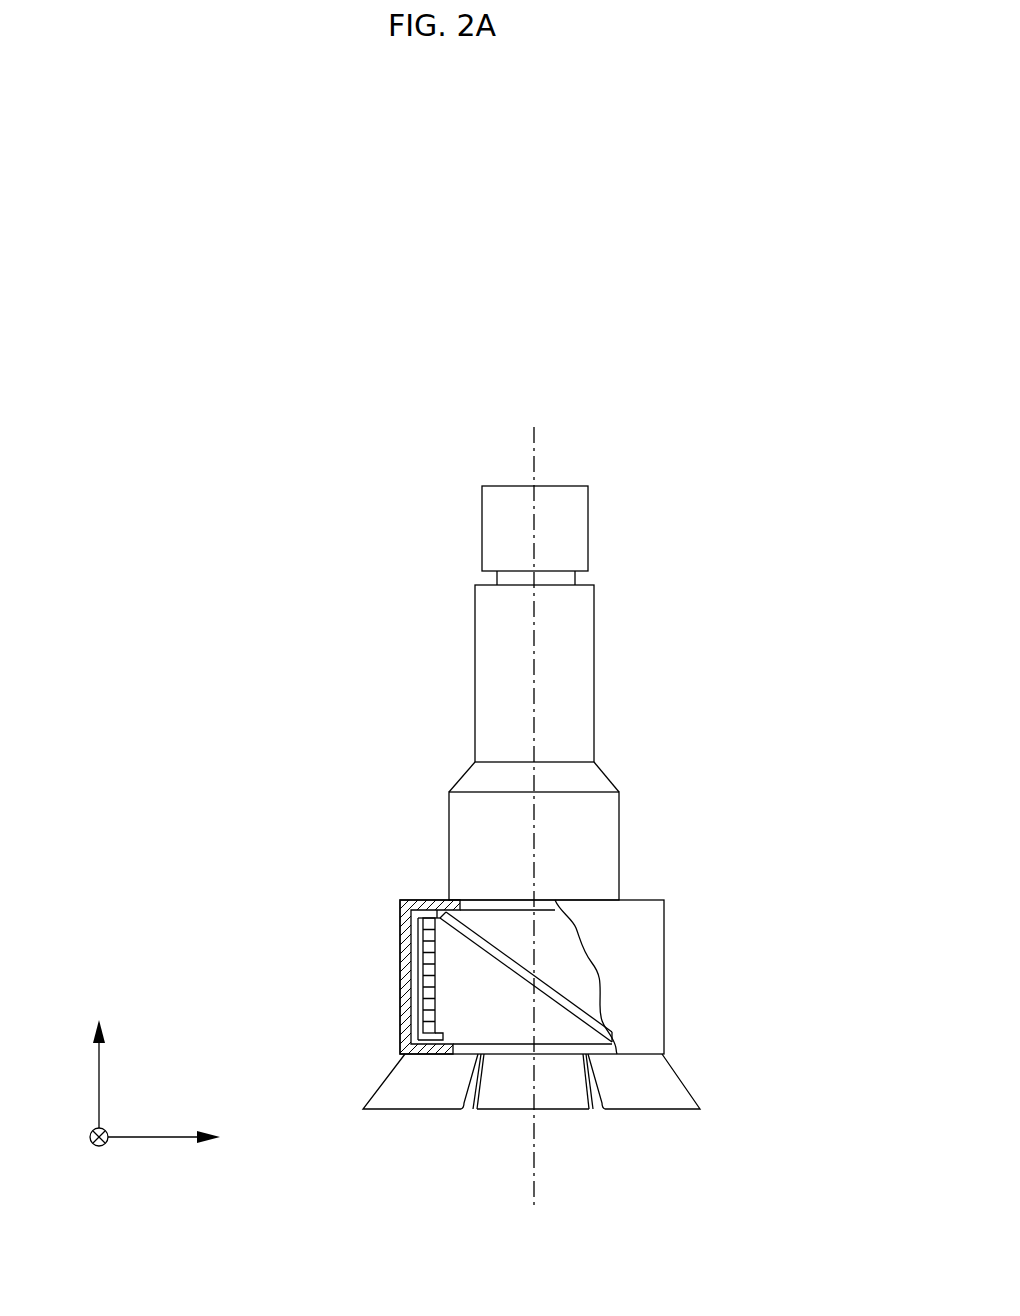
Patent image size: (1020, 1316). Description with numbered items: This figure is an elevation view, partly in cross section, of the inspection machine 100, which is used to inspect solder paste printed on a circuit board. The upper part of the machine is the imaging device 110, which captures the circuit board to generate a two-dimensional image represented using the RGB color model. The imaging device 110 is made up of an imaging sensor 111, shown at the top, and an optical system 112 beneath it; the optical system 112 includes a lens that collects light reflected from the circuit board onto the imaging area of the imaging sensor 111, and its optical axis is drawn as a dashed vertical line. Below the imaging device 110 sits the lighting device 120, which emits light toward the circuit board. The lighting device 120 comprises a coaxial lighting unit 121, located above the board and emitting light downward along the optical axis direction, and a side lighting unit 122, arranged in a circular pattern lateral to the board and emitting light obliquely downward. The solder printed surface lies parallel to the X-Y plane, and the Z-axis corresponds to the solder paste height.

The inspection machine 100 is at (687, 415).
The imaging device 110 is at (737, 473).
The imaging sensor 111 is at (588, 527).
The optical system 112 is at (619, 831).
The lighting device 120 is at (277, 868).
The coaxial lighting unit 121 is at (423, 952).
The side lighting unit 122 is at (381, 1092).